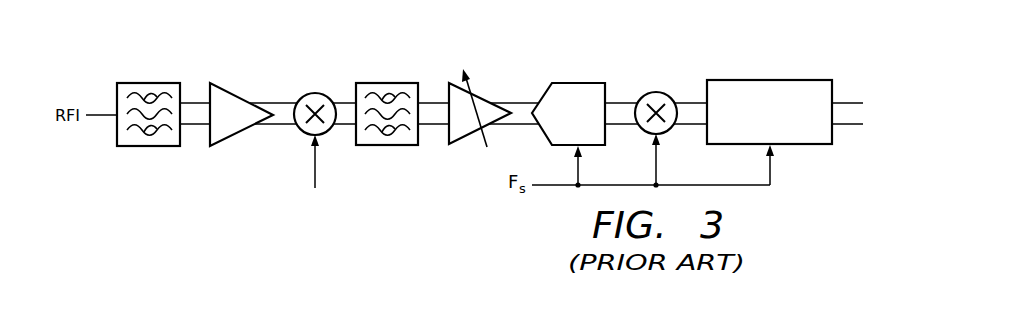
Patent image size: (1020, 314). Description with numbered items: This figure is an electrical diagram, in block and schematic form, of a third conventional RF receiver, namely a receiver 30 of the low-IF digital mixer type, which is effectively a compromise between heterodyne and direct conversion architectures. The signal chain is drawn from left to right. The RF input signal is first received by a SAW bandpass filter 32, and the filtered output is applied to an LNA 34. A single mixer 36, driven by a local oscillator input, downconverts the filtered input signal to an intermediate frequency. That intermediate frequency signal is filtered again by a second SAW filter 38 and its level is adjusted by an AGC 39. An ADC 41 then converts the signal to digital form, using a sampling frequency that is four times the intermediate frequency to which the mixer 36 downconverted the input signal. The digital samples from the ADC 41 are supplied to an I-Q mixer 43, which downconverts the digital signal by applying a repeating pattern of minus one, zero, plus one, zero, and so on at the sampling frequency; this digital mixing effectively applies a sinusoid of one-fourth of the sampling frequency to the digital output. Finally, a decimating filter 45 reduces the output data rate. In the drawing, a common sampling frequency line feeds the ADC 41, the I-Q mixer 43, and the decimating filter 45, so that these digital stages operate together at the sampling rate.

The receiver 30 is at (253, 179).
The SAW bandpass filter 32 is at (148, 82).
The LNA 34 is at (233, 94).
The mixer 36 is at (313, 93).
The second SAW filter 38 is at (385, 83).
The AGC 39 is at (479, 92).
The ADC 41 is at (580, 83).
The I-Q mixer 43 is at (655, 92).
The decimating filter 45 is at (772, 80).